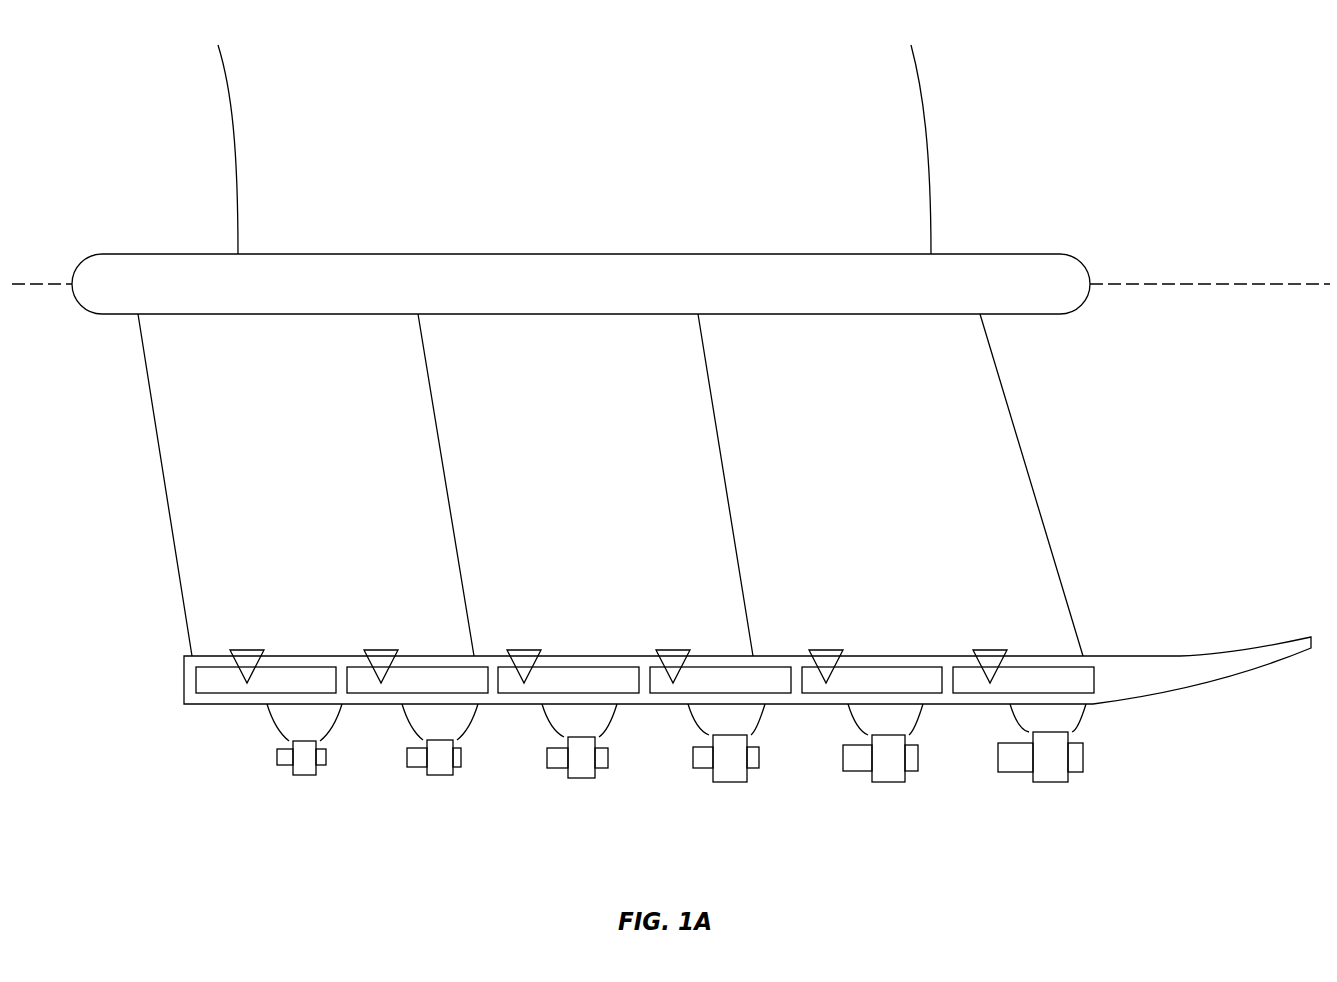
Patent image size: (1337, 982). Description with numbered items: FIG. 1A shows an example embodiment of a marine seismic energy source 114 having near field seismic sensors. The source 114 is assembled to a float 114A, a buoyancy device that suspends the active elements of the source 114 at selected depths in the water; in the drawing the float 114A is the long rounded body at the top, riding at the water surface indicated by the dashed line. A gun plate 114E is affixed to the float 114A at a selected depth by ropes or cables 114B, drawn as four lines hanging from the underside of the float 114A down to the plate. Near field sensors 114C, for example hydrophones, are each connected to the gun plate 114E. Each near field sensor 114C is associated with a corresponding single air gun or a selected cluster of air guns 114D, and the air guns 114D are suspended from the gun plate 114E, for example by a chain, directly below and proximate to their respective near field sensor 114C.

The seismic energy source 114 is at (468, 146).
The float 114A is at (383, 254).
The ropes or cables 114B is at (162, 462).
The near field sensors 114C is at (240, 650).
The air guns 114D is at (307, 777).
The gun plate 114E is at (595, 654).